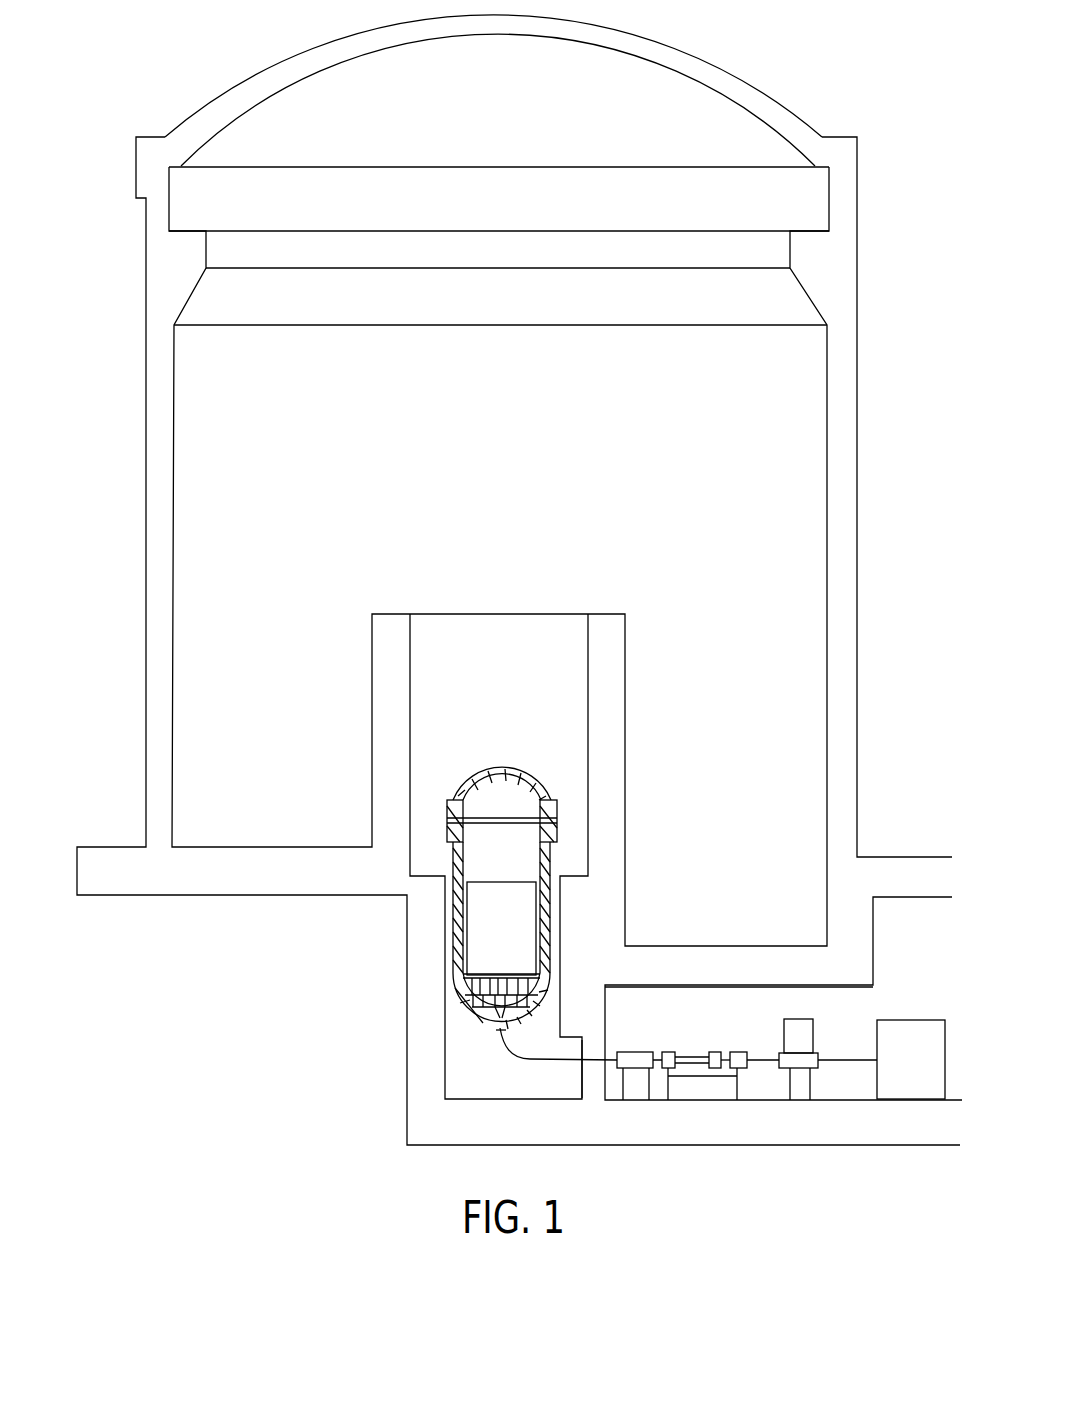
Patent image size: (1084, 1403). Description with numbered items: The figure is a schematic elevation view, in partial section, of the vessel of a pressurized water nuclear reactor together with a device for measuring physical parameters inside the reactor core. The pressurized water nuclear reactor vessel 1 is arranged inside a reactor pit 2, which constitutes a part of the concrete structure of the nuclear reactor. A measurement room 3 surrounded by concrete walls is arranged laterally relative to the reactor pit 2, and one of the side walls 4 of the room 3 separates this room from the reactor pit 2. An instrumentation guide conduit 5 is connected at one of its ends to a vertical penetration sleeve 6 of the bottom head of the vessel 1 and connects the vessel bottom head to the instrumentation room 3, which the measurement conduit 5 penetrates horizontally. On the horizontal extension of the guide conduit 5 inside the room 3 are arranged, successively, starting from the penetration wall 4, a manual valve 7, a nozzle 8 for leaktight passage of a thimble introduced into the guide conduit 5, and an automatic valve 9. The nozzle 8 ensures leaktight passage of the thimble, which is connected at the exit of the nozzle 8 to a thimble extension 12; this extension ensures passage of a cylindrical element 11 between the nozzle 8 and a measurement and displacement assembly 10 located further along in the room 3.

The pressurized water nuclear reactor vessel 1 is at (461, 763).
The reactor pit 2 is at (413, 960).
The measurement room 3 is at (724, 1035).
The side wall 4 is at (580, 1080).
The instrumentation guide conduit 5 is at (507, 1050).
The vertical penetration sleeve 6 is at (500, 1029).
The manual valve 7 is at (633, 1052).
The nozzle 8 is at (697, 1055).
The automatic valve 9 is at (813, 1035).
The measurement and displacement assembly 10 is at (925, 1040).
The cylindrical element 11 is at (847, 1063).
The thimble extension 12 is at (738, 1063).